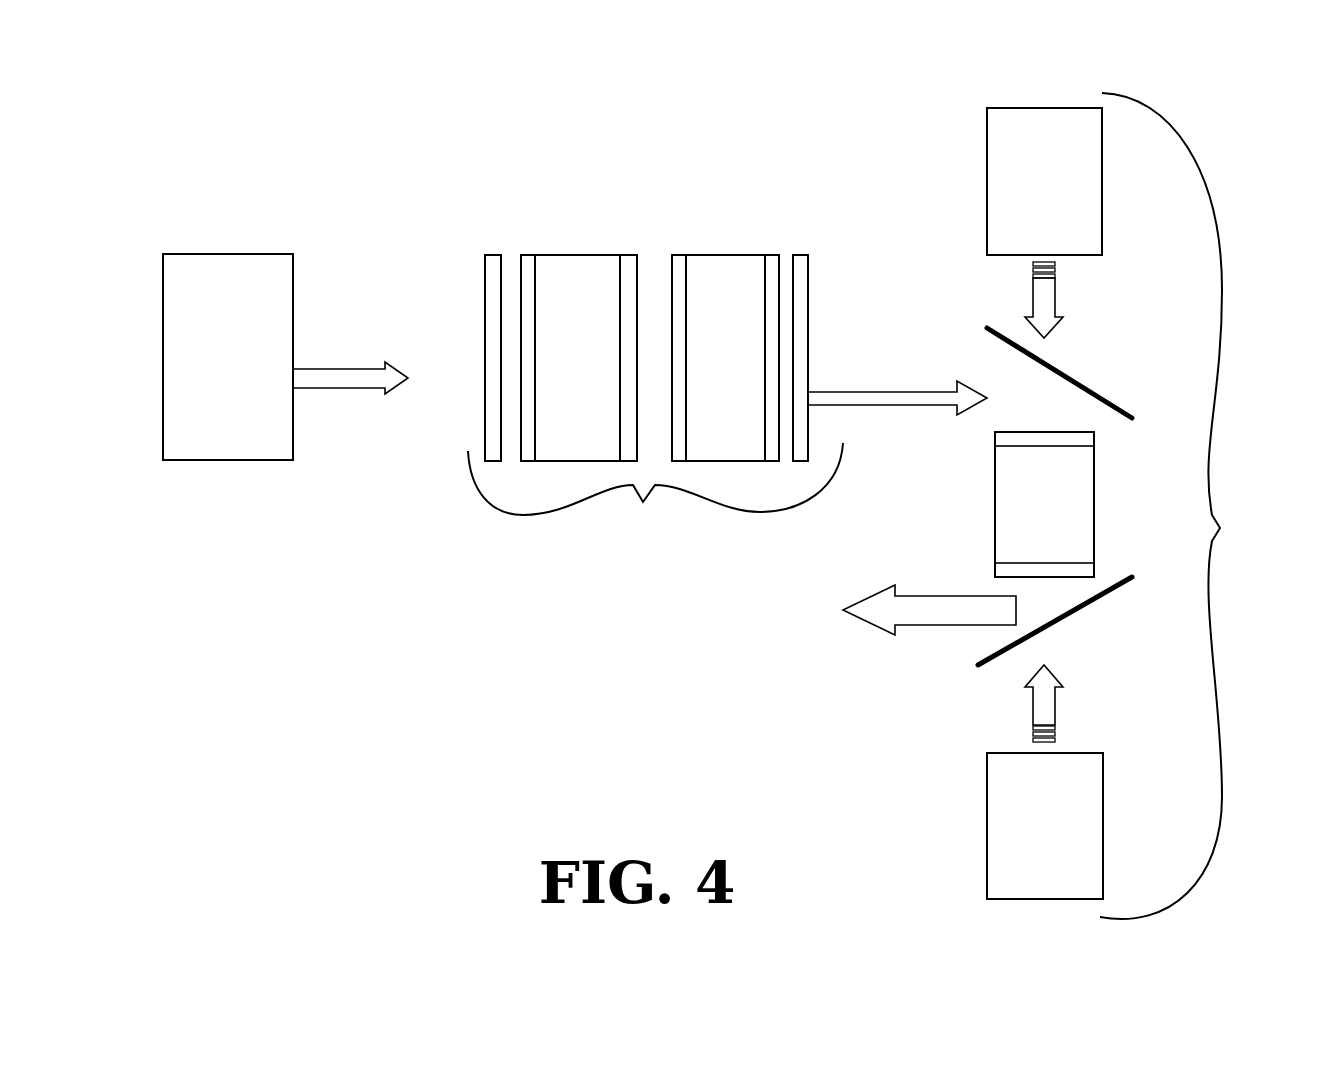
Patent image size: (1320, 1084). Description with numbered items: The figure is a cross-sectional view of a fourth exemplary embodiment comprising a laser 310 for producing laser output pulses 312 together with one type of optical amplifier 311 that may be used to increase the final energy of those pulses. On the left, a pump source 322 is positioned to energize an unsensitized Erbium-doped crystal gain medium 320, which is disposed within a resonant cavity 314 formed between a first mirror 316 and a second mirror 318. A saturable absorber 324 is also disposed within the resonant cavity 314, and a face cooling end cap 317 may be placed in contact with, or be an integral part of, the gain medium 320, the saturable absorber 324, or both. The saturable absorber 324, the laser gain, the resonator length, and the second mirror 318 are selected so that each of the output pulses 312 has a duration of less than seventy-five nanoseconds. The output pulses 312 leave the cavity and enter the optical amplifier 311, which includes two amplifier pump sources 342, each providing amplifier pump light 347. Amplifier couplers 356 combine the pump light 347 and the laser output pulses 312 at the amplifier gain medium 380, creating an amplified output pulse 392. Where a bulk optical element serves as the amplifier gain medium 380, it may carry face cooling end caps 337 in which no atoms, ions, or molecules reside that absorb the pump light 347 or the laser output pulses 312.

The laser 310 is at (817, 150).
The optical amplifier 311 is at (1181, 506).
The laser output pulses 312 is at (838, 390).
The resonant cavity 314 is at (655, 488).
The first mirror 316 is at (493, 253).
The face cooling end cap 317 is at (528, 253).
The second mirror 318 is at (800, 253).
The unsensitized Erbium-doped crystal gain medium 320 is at (600, 253).
The pump source 322 is at (230, 253).
The saturable absorber 324 is at (723, 253).
The face cooling end caps 337 is at (1098, 438).
The amplifier pump sources 342 is at (1107, 165).
The amplifier pump light 347 is at (1060, 305).
The amplifier couplers 356 is at (1067, 372).
The amplifier gain medium 380 is at (1098, 495).
The amplified output pulse 392 is at (863, 620).